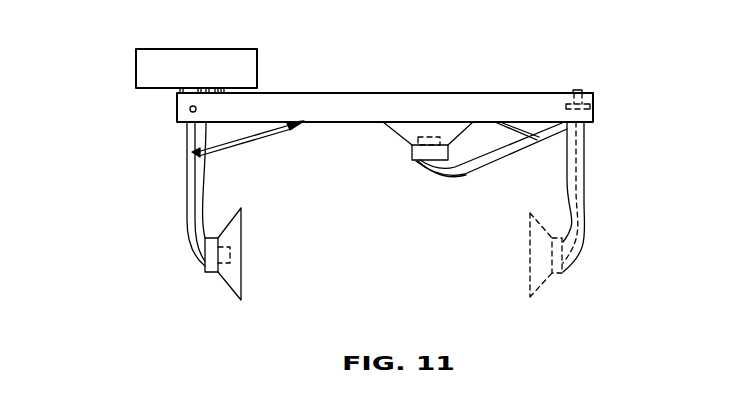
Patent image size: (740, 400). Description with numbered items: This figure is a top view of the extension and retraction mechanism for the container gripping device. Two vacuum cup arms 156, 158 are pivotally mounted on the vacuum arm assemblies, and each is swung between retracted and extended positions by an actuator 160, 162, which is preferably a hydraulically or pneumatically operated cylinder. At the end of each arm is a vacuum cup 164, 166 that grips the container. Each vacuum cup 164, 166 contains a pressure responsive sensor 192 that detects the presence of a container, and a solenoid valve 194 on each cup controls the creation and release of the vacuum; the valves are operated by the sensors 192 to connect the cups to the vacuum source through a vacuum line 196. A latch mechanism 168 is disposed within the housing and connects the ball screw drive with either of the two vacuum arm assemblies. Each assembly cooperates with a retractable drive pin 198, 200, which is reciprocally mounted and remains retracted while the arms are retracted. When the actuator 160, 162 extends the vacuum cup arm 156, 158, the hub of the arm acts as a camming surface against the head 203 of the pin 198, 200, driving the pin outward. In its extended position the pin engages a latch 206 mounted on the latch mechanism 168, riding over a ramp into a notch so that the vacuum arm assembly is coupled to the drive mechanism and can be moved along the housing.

The vacuum cup arm 156 is at (207, 178).
The vacuum cup arm 158 is at (475, 172).
The actuator 160 is at (515, 123).
The actuator 162 is at (300, 127).
The vacuum cup 164 is at (228, 284).
The vacuum cup 166 is at (403, 135).
The latch mechanism 168 is at (257, 62).
The pressure responsive sensor 192 is at (230, 255).
The solenoid valve 194 is at (205, 273).
The vacuum line 196 is at (193, 176).
The retractable drive pin 198 is at (197, 88).
The retractable drive pin 200 is at (581, 90).
The head 203 is at (594, 110).
The latch 206 is at (181, 91).